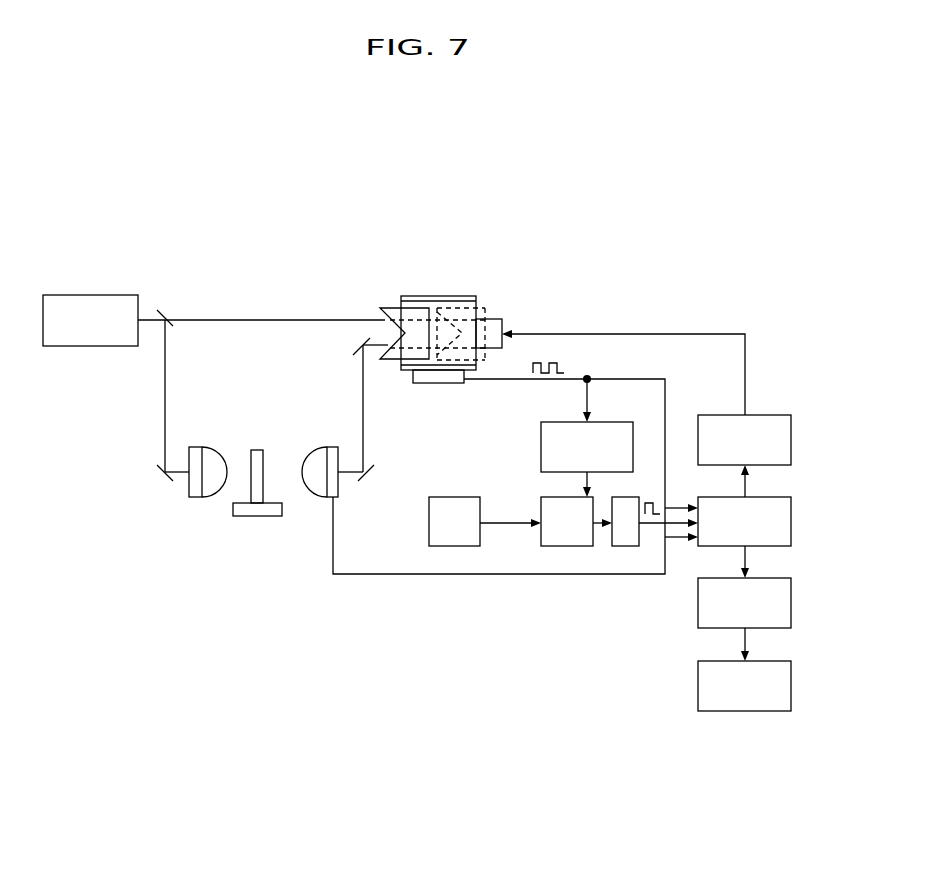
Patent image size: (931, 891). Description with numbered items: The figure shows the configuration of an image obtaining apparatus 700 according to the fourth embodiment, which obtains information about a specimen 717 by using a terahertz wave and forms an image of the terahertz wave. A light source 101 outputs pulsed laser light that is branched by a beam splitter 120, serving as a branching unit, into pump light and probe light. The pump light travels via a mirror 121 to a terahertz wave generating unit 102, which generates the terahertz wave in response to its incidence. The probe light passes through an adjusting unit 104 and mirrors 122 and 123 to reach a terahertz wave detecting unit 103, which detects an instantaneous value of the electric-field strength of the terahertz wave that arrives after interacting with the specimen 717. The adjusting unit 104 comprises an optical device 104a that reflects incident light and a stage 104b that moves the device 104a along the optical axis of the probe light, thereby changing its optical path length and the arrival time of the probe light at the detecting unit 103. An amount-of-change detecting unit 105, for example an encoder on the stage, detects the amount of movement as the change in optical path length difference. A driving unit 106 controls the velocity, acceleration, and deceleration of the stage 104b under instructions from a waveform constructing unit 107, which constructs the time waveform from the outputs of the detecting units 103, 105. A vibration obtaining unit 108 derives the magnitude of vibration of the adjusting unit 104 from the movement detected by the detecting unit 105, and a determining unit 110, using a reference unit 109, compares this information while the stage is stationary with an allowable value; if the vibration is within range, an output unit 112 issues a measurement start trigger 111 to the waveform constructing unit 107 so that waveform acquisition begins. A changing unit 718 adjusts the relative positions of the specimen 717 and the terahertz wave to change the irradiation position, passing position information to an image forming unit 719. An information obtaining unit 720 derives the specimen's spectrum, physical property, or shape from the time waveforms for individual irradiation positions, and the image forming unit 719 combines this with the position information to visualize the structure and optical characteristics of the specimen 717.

The image obtaining apparatus 700 is at (587, 116).
The light source 101 is at (95, 295).
The beam splitter 120 is at (165, 314).
The mirror 121 is at (158, 472).
The mirror 122 is at (364, 476).
The mirror 123 is at (362, 345).
The terahertz wave generating unit 102 is at (195, 497).
The terahertz wave detecting unit 103 is at (320, 489).
The adjusting unit 104 is at (465, 212).
The optical device 104a is at (390, 306).
The moving unit (stage) 104b is at (447, 296).
The amount-of-change detecting unit 105 is at (428, 383).
The driving unit 106 is at (766, 415).
The waveform constructing unit 107 is at (772, 497).
The vibration obtaining unit 108 is at (541, 440).
The reference unit 109 is at (458, 546).
The determining unit 110 is at (560, 546).
The measurement start trigger 111 is at (659, 518).
The output unit 112 is at (625, 546).
The specimen 717 is at (258, 450).
The changing unit 718 is at (243, 516).
The image forming unit 719 is at (767, 711).
The information obtaining unit 720 is at (778, 578).